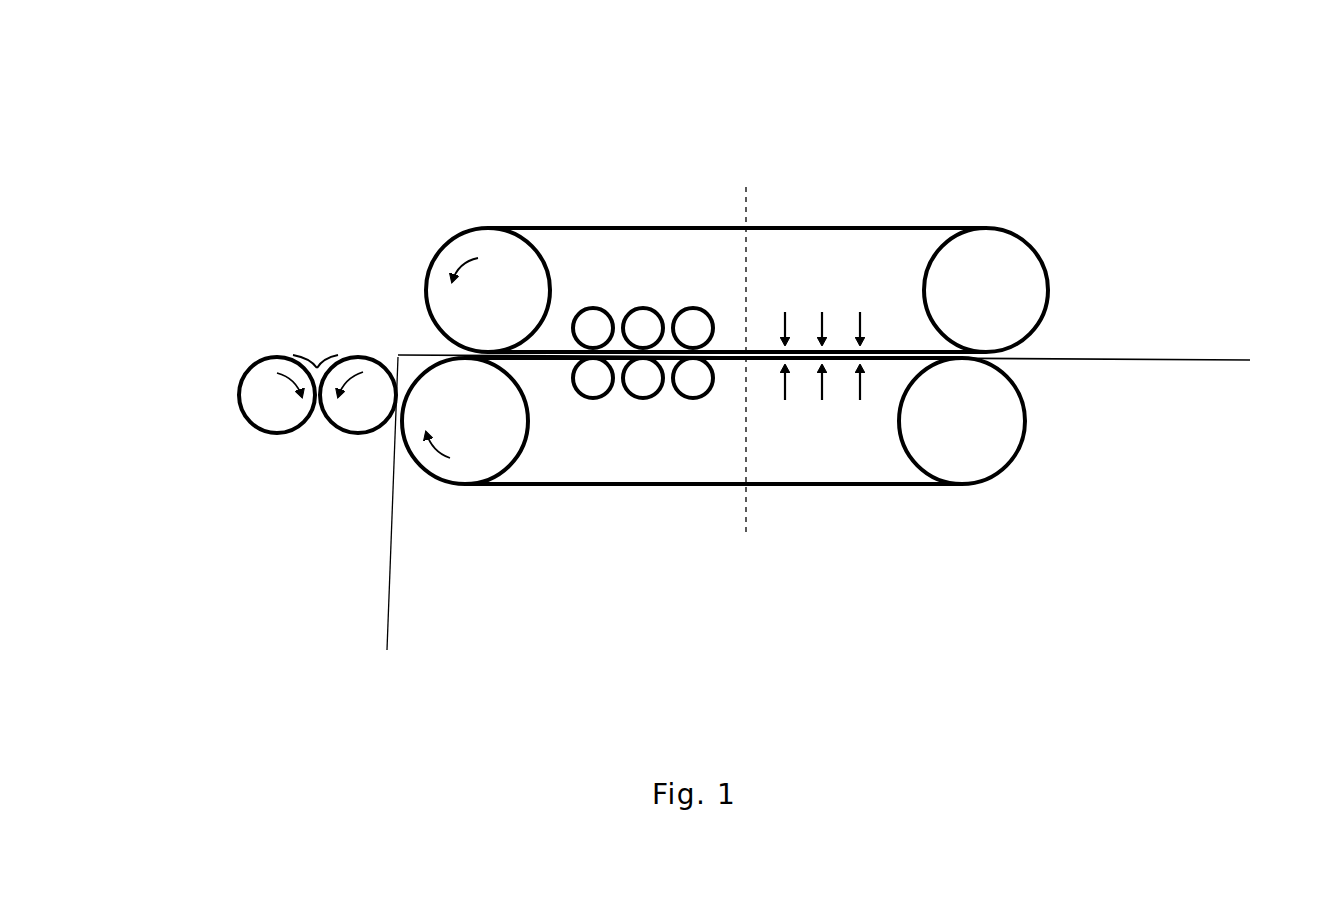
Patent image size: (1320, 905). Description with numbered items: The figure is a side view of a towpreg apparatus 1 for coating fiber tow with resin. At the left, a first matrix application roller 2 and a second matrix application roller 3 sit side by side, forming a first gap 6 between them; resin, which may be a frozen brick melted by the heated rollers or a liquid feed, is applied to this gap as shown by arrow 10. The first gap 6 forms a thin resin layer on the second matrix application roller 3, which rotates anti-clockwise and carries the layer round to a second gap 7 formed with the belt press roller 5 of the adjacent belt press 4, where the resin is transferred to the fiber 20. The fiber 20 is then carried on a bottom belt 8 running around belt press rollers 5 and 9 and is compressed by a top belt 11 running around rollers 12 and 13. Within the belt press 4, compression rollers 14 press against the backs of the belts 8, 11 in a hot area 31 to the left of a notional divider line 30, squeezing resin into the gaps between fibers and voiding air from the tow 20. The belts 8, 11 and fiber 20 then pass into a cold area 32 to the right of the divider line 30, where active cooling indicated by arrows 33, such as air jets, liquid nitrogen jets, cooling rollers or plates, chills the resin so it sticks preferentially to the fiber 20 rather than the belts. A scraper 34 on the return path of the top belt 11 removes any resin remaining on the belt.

The towpreg apparatus 1 is at (320, 127).
The first matrix application roller 2 is at (265, 398).
The second matrix application roller 3 is at (372, 378).
The belt press 4 is at (564, 545).
The belt press roller 5 is at (470, 437).
The first gap 6 is at (318, 426).
The second gap 7 is at (364, 504).
The bottom belt 8 is at (810, 497).
The belt press roller 9 is at (965, 444).
The arrow 10 is at (317, 342).
The top belt 11 is at (652, 226).
The roller 12 is at (506, 312).
The roller 13 is at (1000, 310).
The compression rollers 14 is at (602, 310).
The fiber 20 is at (390, 632).
The notional divider line 30 is at (748, 200).
The hot area 31 is at (718, 184).
The cold area 32 is at (789, 180).
The arrows 33 is at (862, 318).
The scrapers 34 is at (876, 226).